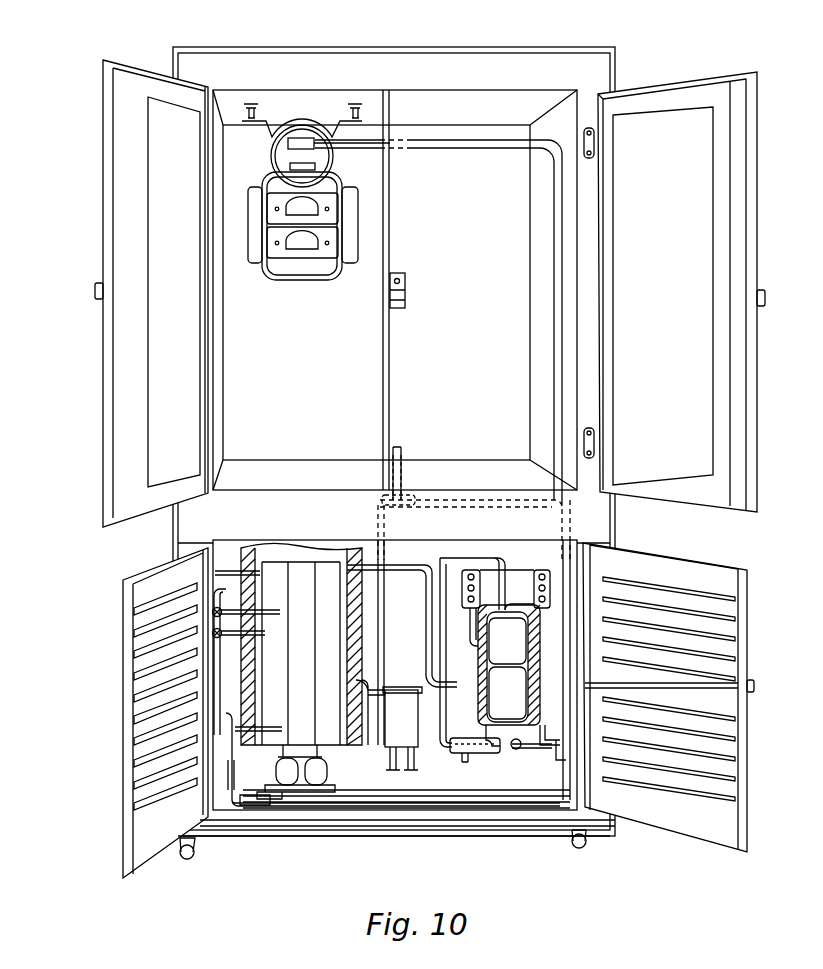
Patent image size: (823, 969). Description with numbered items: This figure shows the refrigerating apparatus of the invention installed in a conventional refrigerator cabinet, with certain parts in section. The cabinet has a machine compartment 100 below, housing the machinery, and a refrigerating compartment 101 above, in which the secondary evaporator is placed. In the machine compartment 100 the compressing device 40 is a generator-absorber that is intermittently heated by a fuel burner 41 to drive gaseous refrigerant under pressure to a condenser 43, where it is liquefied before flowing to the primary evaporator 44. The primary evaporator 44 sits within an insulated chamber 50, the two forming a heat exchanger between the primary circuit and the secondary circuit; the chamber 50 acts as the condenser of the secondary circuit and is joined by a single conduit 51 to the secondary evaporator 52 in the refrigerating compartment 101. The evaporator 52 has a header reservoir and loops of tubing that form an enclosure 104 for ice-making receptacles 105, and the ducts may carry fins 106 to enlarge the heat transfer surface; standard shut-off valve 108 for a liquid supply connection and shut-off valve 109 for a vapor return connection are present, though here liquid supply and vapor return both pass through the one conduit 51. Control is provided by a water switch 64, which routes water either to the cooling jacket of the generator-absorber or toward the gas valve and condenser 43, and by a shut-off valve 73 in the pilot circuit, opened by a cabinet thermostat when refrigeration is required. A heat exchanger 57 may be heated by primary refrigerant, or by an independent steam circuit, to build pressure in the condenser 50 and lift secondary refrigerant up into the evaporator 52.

The refrigerating compartment 101 is at (498, 112).
The evaporator 52 is at (310, 128).
The shut-off valve 108 is at (310, 165).
The shut-off valve 109 is at (289, 143).
The enclosure 104 is at (302, 267).
The ice-making receptacles 105 is at (264, 268).
The fins 106 is at (350, 262).
The conduit 51 is at (490, 148).
The shut-off valve 73 is at (400, 455).
The compressing device 40 is at (322, 578).
The fuel burner 41 is at (322, 767).
The condenser 43 is at (480, 590).
The evaporator 44 is at (523, 633).
The chamber 50 is at (525, 683).
The water switch 64 is at (410, 686).
The heat exchanger 57 is at (462, 754).
The machine compartment 100 is at (513, 777).